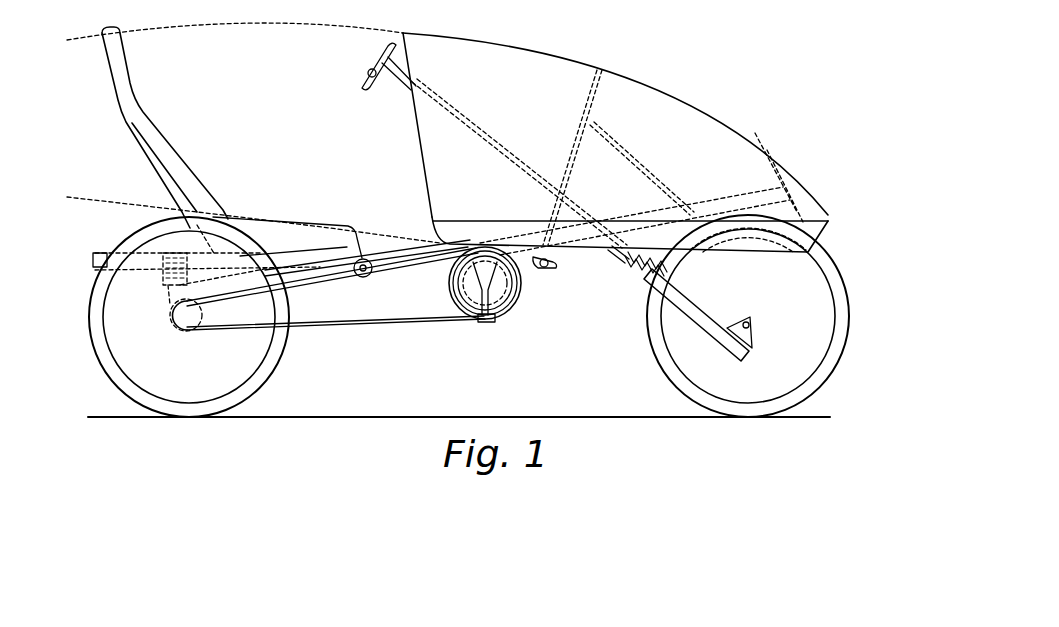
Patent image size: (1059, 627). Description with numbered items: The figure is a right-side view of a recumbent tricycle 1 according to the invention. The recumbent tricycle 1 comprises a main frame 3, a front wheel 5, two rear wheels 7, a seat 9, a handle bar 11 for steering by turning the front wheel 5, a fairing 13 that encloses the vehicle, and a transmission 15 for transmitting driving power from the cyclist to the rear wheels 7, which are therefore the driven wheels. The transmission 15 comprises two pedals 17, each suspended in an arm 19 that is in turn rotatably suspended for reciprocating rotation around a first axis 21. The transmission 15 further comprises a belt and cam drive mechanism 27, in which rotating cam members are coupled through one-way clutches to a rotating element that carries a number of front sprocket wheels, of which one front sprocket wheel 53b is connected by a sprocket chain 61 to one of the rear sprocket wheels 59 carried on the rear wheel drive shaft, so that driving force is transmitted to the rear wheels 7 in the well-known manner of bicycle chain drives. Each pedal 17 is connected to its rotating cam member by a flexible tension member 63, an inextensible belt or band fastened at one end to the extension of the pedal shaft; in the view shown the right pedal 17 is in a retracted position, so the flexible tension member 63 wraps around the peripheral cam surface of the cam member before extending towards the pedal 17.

The recumbent tricycle 1 is at (728, 80).
The main frame 3 is at (388, 236).
The front wheel 5 is at (690, 383).
The rear wheels 7 is at (262, 385).
The seat 9 is at (300, 228).
The handle bar 11 is at (370, 72).
The fairing 13 is at (566, 60).
The transmission 15 is at (488, 342).
The pedals 17 is at (700, 196).
The arm 19 is at (567, 160).
The first axis 21 is at (596, 124).
The belt and cam drive mechanism 27 is at (522, 318).
The front sprocket wheel 53b is at (452, 290).
The rear sprocket wheels 59 is at (182, 342).
The sprocket chain 61 is at (365, 322).
The flexible tension member 63 is at (524, 266).